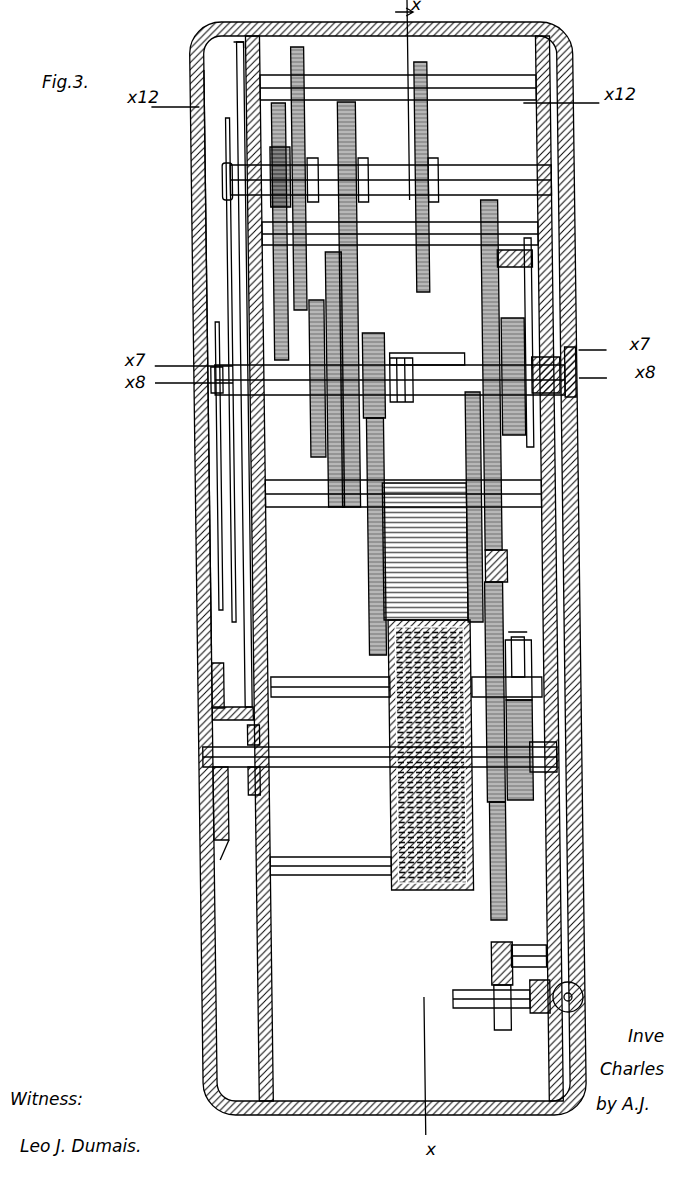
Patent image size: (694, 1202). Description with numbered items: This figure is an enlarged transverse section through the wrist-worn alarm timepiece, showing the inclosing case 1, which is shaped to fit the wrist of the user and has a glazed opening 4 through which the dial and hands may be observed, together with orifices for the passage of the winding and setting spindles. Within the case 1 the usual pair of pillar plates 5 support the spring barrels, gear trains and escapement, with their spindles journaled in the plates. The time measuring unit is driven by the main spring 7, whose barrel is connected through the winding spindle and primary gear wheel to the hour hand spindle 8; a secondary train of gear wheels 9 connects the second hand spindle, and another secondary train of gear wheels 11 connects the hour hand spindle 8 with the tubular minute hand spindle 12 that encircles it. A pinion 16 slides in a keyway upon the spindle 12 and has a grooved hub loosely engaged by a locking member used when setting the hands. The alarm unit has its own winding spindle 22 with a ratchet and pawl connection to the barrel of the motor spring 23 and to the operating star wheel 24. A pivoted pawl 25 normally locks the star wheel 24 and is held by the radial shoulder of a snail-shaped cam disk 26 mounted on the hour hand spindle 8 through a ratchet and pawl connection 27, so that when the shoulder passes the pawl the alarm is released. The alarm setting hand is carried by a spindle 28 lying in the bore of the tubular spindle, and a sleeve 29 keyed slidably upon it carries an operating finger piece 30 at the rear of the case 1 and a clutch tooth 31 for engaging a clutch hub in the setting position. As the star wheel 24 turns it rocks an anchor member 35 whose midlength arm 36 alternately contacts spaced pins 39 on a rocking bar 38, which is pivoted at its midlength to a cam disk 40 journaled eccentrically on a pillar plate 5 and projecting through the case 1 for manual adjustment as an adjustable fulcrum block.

The inclosing case 1 is at (191, 56).
The glazed opening 4 is at (190, 266).
The pillar plates 5 is at (260, 600).
The main spring 7 is at (417, 536).
The hour hand spindle 8 is at (427, 396).
The secondary train of gear wheels 9 is at (426, 117).
The secondary train of gear wheels 11 is at (304, 452).
The minute hand spindle 12 is at (288, 398).
The pinion 16 is at (380, 416).
The winding spindle of the alarm unit 22 is at (300, 748).
The motor spring 23 is at (382, 808).
The star wheel 24 is at (496, 902).
The pivoted pawl 25 is at (498, 572).
The cam disk 26 is at (478, 297).
The ratchet and pawl connection 27 is at (521, 326).
The carrying spindle of the alarm setting hand 28 is at (208, 386).
The sleeve 29 is at (556, 356).
The operating finger piece 30 is at (572, 406).
The clutch tooth 31 is at (529, 292).
The rocking anchor member 35 is at (478, 977).
The arm 36 is at (486, 1022).
The rocking bar 38 is at (522, 1016).
The pins 39 is at (452, 1004).
The cam disk 40 is at (568, 996).